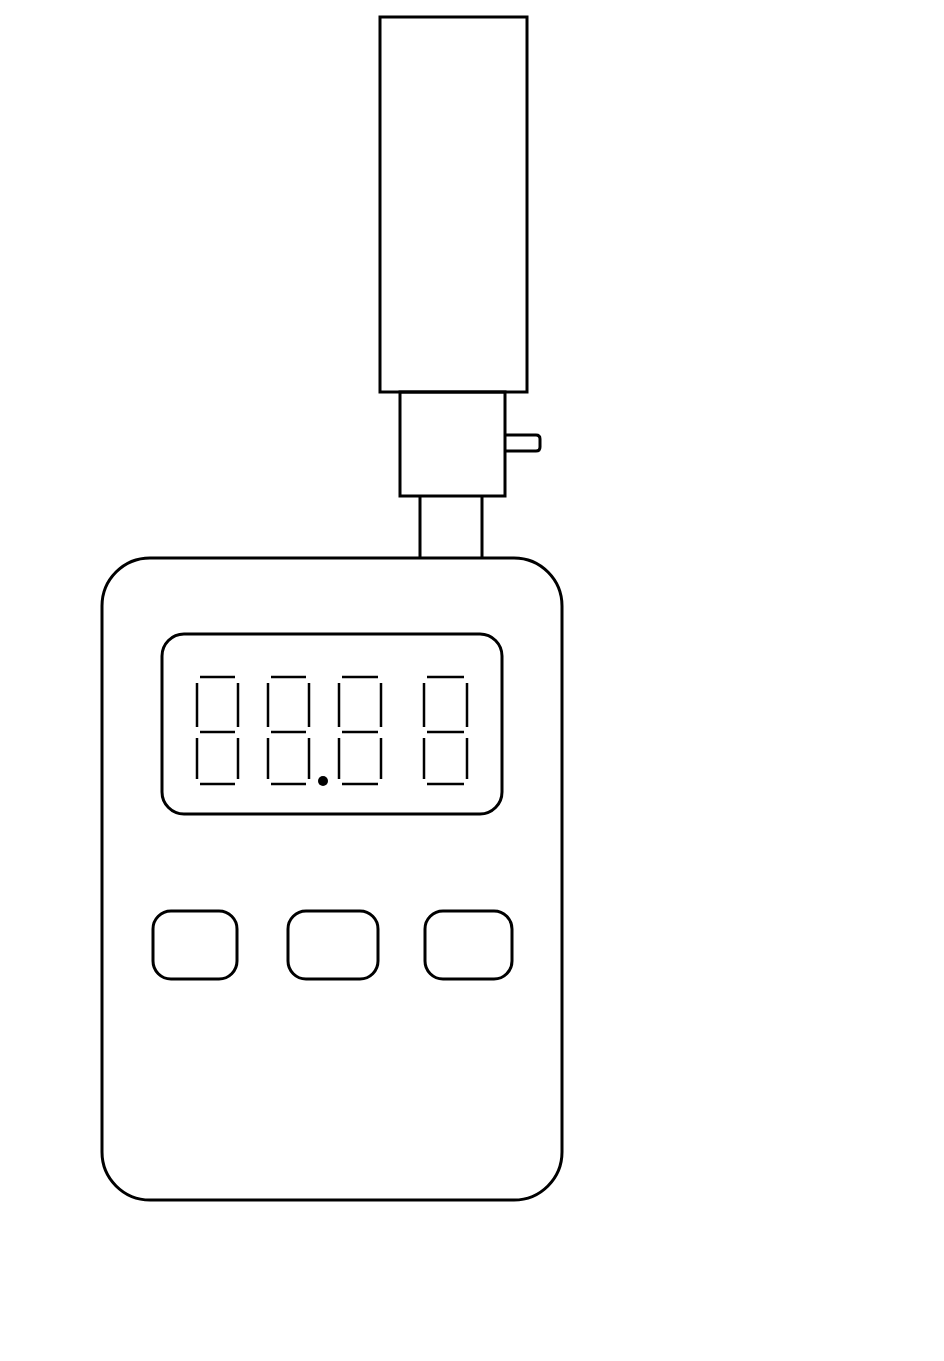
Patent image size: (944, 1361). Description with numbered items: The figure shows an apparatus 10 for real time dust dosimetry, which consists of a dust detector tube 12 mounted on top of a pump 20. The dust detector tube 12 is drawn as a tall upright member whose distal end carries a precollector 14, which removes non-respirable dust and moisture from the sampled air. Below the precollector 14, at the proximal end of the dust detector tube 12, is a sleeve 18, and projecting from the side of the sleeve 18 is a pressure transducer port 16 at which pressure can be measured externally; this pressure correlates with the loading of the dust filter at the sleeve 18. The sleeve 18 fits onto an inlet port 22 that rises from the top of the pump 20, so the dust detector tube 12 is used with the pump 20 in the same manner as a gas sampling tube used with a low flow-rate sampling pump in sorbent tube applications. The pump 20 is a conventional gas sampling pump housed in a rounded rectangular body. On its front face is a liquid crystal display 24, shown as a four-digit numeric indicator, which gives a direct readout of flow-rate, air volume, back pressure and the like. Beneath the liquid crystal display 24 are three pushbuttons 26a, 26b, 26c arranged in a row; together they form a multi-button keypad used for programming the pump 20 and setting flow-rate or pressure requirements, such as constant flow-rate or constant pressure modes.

The apparatus 10 is at (748, 784).
The dust detector tube 12 is at (278, 175).
The precollector 14 is at (527, 274).
The pressure transducer port 16 is at (522, 451).
The sleeve 18 is at (400, 437).
The pump 20 is at (102, 600).
The inlet port 22 is at (482, 536).
The liquid crystal display 24 is at (502, 692).
The pushbutton 26a is at (193, 979).
The pushbutton 26b is at (337, 979).
The pushbutton 26c is at (470, 979).